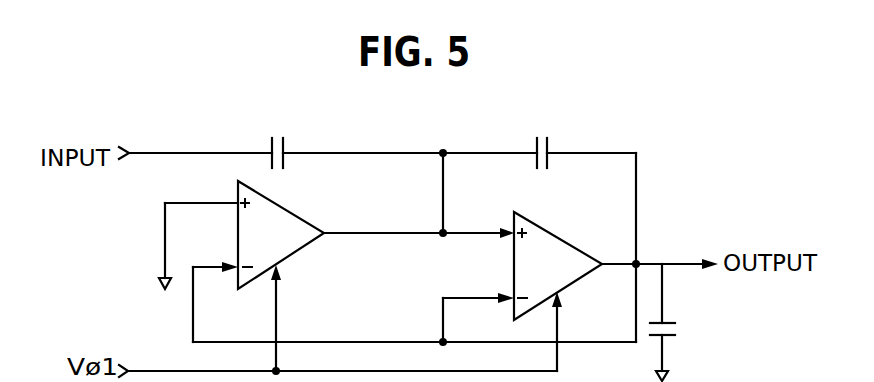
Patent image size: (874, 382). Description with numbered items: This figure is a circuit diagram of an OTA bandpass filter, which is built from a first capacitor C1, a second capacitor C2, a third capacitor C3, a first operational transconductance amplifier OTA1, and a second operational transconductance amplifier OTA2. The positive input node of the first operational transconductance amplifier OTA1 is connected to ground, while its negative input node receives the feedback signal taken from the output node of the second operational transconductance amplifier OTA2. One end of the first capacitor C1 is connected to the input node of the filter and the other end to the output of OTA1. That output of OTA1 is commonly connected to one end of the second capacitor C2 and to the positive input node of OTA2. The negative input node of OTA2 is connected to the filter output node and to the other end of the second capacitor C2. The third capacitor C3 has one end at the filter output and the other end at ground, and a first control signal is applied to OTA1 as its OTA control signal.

The first capacitor C1 is at (277, 138).
The second capacitor C2 is at (544, 138).
The third capacitor C3 is at (682, 322).
The first operational transconductance amplifier OTA1 is at (281, 235).
The second operational transconductance amplifier OTA2 is at (558, 266).